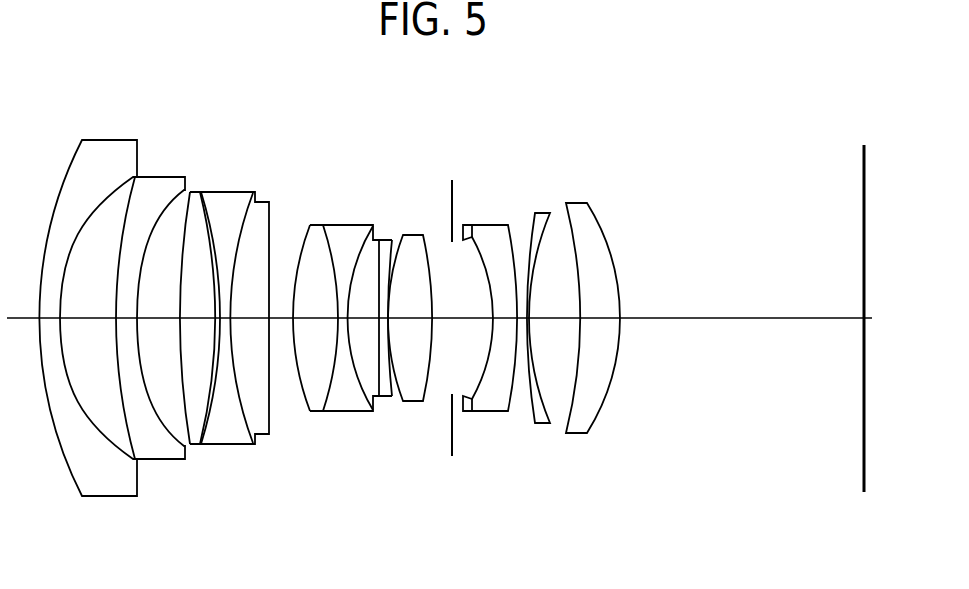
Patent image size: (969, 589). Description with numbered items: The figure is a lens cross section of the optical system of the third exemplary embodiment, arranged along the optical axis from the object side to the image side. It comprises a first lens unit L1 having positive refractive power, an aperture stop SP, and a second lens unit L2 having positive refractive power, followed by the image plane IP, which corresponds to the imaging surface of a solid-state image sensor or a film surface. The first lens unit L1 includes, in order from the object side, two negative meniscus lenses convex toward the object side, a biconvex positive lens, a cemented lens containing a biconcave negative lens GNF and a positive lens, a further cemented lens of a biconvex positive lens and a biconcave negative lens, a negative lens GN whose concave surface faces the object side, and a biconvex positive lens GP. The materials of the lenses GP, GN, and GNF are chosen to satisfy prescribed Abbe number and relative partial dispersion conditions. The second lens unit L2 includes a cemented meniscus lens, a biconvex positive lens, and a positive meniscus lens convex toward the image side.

The first lens unit L1 is at (423, 503).
The second lens unit L2 is at (628, 503).
The negative lens GNF is at (222, 204).
The negative lens GN is at (375, 255).
The positive lens GP is at (408, 233).
The aperture stop SP is at (458, 199).
The image plane IP is at (859, 201).